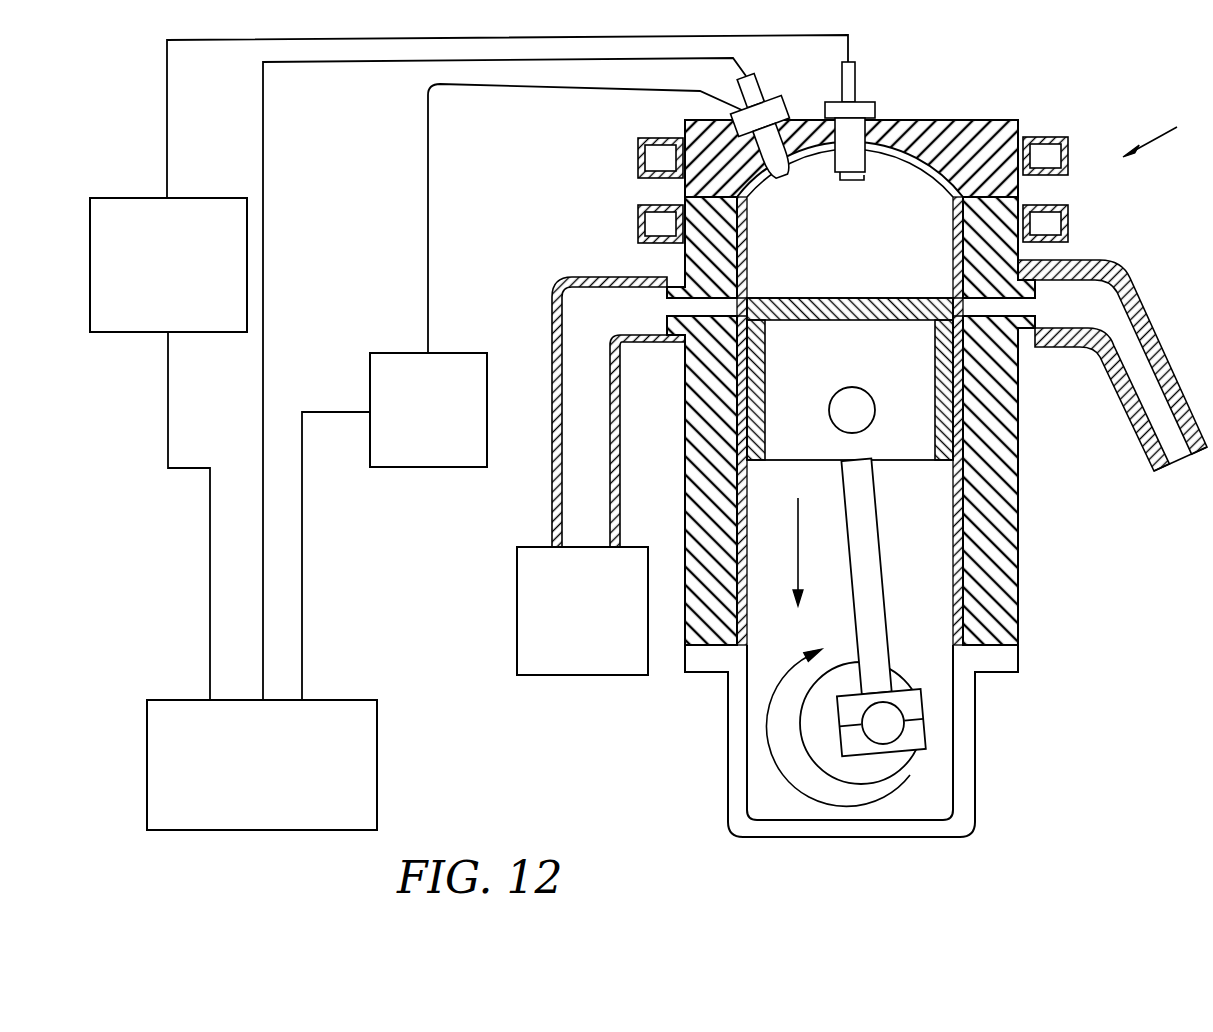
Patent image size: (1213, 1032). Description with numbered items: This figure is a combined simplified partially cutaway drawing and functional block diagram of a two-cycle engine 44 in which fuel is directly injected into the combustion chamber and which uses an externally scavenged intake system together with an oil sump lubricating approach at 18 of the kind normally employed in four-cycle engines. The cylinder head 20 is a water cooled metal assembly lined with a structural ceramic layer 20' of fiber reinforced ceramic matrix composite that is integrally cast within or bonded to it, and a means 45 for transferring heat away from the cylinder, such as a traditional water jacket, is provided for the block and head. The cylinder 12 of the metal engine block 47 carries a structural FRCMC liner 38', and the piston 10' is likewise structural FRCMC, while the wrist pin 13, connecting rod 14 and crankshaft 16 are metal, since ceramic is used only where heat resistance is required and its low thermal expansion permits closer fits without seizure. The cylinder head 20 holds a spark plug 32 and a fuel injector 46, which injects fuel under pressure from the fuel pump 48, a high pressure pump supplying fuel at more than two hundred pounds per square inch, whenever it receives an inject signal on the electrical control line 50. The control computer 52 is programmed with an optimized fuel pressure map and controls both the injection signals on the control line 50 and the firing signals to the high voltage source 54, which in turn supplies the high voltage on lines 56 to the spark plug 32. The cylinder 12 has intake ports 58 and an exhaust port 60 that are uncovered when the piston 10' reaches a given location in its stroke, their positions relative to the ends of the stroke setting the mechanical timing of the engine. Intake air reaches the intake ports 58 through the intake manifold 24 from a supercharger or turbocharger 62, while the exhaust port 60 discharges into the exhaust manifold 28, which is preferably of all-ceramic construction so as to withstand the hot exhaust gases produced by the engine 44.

The piston 10' is at (850, 379).
The cylinder 12 is at (1020, 194).
The wrist pin 13 is at (852, 405).
The connecting rod 14 is at (858, 503).
The crankshaft 16 is at (817, 716).
The oil sump 18 is at (925, 792).
The cylinder head 20 is at (882, 146).
The structural ceramic layer 20' is at (850, 187).
The intake manifold 24 is at (601, 277).
The exhaust manifold 28 is at (1096, 262).
The spark plug 32 is at (851, 96).
The structural FRCMC liner 38' is at (850, 421).
The engine 44 is at (1167, 129).
The means for transferring heat 45 is at (640, 207).
The fuel injector 46 is at (754, 98).
The metal engine block 47 is at (1020, 460).
The fuel pump 48 is at (447, 349).
The electrical control line 50 is at (381, 62).
The control computer 52 is at (377, 735).
The high voltage source 54 is at (213, 332).
The high voltage lines 56 is at (240, 41).
The intake ports 58 is at (668, 302).
The exhaust port 60 is at (1035, 305).
The supercharger or turbocharger 62 is at (517, 580).